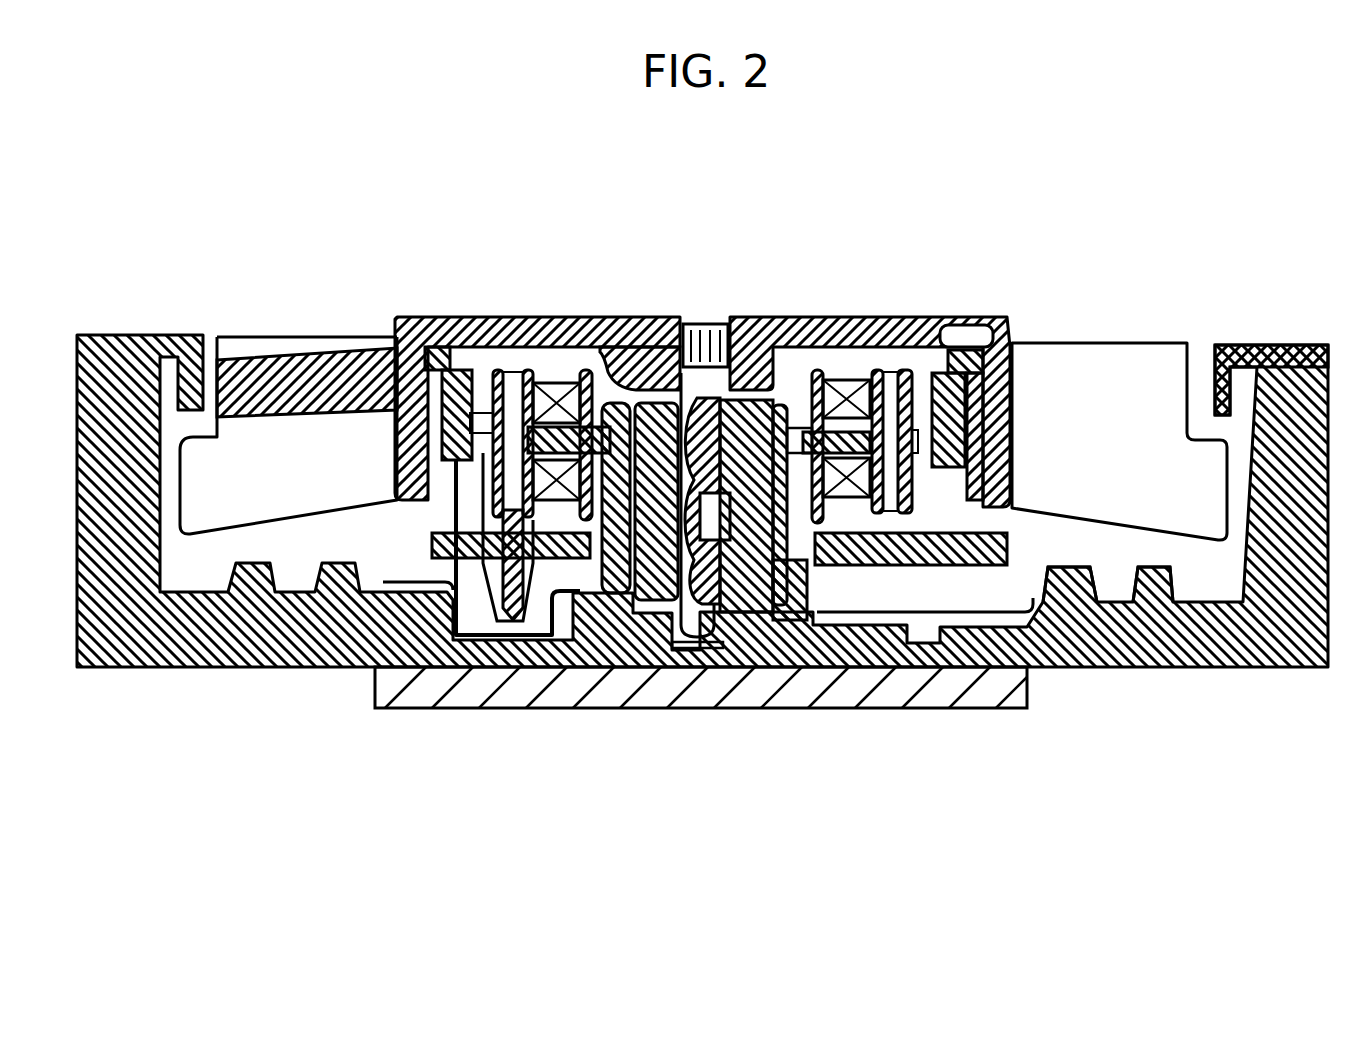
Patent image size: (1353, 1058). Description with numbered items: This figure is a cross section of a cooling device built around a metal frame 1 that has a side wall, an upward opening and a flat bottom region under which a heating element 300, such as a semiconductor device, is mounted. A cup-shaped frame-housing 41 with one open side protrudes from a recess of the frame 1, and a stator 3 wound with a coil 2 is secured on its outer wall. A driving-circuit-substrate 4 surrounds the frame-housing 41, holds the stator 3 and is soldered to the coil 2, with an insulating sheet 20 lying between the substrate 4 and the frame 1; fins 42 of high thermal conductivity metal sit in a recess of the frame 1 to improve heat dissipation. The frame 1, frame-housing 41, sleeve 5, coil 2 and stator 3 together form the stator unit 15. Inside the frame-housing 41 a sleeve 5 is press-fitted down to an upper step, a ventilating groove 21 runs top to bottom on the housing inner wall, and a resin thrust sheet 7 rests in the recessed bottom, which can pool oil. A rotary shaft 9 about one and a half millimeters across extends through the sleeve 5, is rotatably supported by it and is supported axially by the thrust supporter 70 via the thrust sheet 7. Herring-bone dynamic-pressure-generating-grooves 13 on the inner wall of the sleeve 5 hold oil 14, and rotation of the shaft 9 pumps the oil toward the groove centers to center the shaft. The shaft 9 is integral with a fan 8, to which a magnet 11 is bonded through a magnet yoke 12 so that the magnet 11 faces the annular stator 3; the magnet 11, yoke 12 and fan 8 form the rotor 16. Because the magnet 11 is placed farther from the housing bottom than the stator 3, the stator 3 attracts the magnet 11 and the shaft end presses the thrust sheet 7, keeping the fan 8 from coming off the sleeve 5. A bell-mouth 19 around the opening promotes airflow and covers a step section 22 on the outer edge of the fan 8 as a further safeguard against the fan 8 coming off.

The frame 1 is at (178, 643).
The coil 2 is at (857, 377).
The stator 3 is at (588, 505).
The driving-circuit-substrate 4 is at (435, 582).
The sleeve 5 is at (765, 615).
The thrust sheet 7 is at (713, 655).
The fan 8 is at (312, 355).
The rotary shaft 9 is at (697, 613).
The magnet 11 is at (1002, 340).
The magnet yoke 12 is at (452, 345).
The dynamic-pressure-generating-grooves 13 is at (757, 320).
The oil 14 is at (655, 317).
The stator unit 15 is at (457, 562).
The rotor 16 is at (627, 320).
The bell-mouth 19 is at (1268, 343).
The insulating sheet 20 is at (963, 620).
The ventilating groove 21 is at (630, 490).
The step section 22 is at (1193, 483).
The frame-housing 41 is at (787, 403).
The fins 42 is at (1145, 575).
The thrust supporter 70 is at (690, 655).
The heating element 300 is at (875, 698).